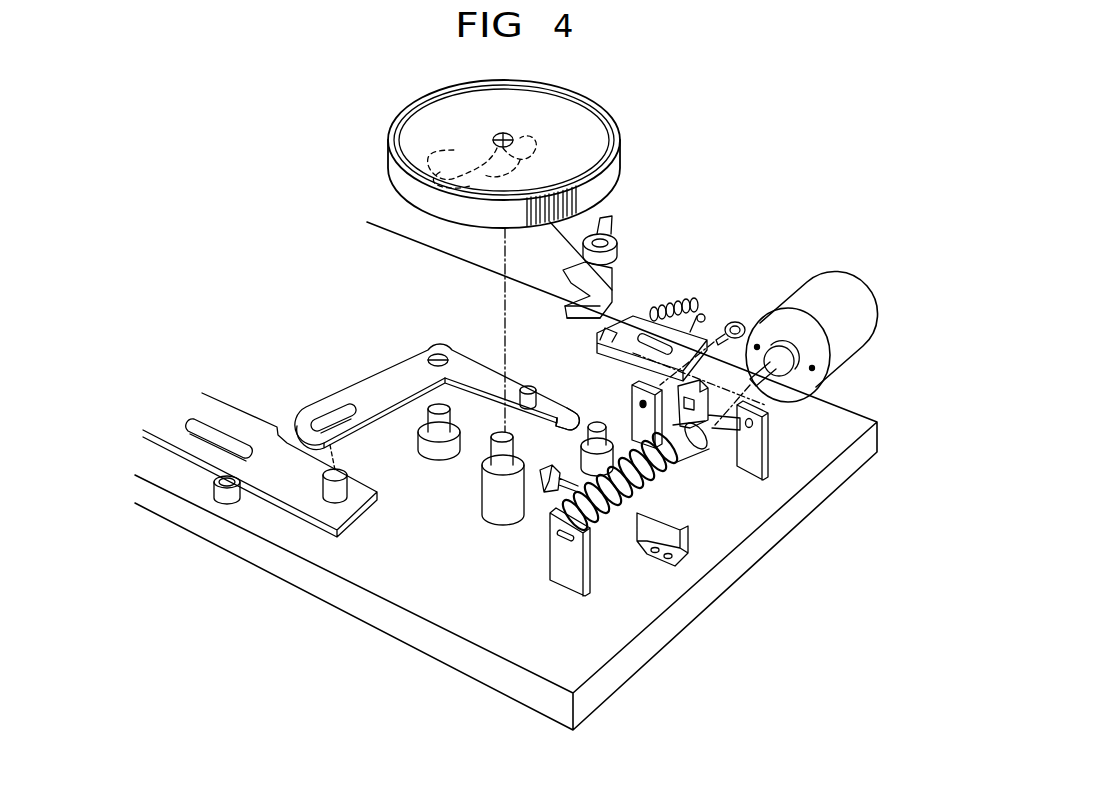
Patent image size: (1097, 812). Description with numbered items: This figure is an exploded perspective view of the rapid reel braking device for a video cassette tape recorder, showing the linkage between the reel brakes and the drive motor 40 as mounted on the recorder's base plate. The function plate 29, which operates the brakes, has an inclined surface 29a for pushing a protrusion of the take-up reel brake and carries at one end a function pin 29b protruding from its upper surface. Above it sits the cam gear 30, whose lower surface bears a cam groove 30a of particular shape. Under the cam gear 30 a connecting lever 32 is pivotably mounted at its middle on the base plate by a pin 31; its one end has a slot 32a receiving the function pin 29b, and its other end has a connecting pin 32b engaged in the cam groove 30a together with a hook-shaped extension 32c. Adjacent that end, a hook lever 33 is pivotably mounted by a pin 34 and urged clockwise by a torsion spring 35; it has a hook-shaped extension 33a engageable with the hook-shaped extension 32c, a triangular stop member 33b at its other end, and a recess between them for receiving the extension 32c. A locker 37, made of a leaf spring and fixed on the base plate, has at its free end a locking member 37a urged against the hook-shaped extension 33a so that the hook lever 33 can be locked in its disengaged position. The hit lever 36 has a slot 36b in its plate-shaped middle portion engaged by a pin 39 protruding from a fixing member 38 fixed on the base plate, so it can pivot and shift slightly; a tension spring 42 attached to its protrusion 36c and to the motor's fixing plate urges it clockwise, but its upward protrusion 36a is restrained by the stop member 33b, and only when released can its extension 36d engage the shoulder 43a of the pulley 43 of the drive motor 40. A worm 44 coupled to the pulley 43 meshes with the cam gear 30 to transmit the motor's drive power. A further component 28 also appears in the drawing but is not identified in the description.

The guide pin 28 is at (225, 505).
The function plate 29 is at (275, 520).
The inclined surface 29a is at (280, 425).
The function pin 29b is at (334, 500).
The cam gear 30 is at (397, 142).
The cam groove 30a is at (388, 172).
The pin 31 is at (437, 440).
The connecting lever 32 is at (375, 382).
The slot 32a is at (326, 420).
The connecting pin 32b is at (522, 392).
The hook-shaped extension 32c is at (560, 412).
The hook lever 33 is at (568, 268).
The hook-shaped extension 33a is at (566, 308).
The triangular stop member 33b is at (612, 226).
The pin 34 is at (596, 424).
The torsion spring 35 is at (568, 232).
The hit lever 36 is at (592, 336).
The upward protrusion 36a is at (630, 325).
The slot 36b is at (645, 335).
The protrusion 36c is at (668, 308).
The extension 36d is at (706, 335).
The locker 37 is at (688, 548).
The locking member 37a is at (546, 488).
The fixing member 38 is at (632, 395).
The pin 39 is at (740, 330).
The drive motor 40 is at (847, 352).
The tension spring 42 is at (690, 332).
The pulley 43 is at (700, 445).
The shoulder 43a is at (713, 435).
The worm 44 is at (676, 492).